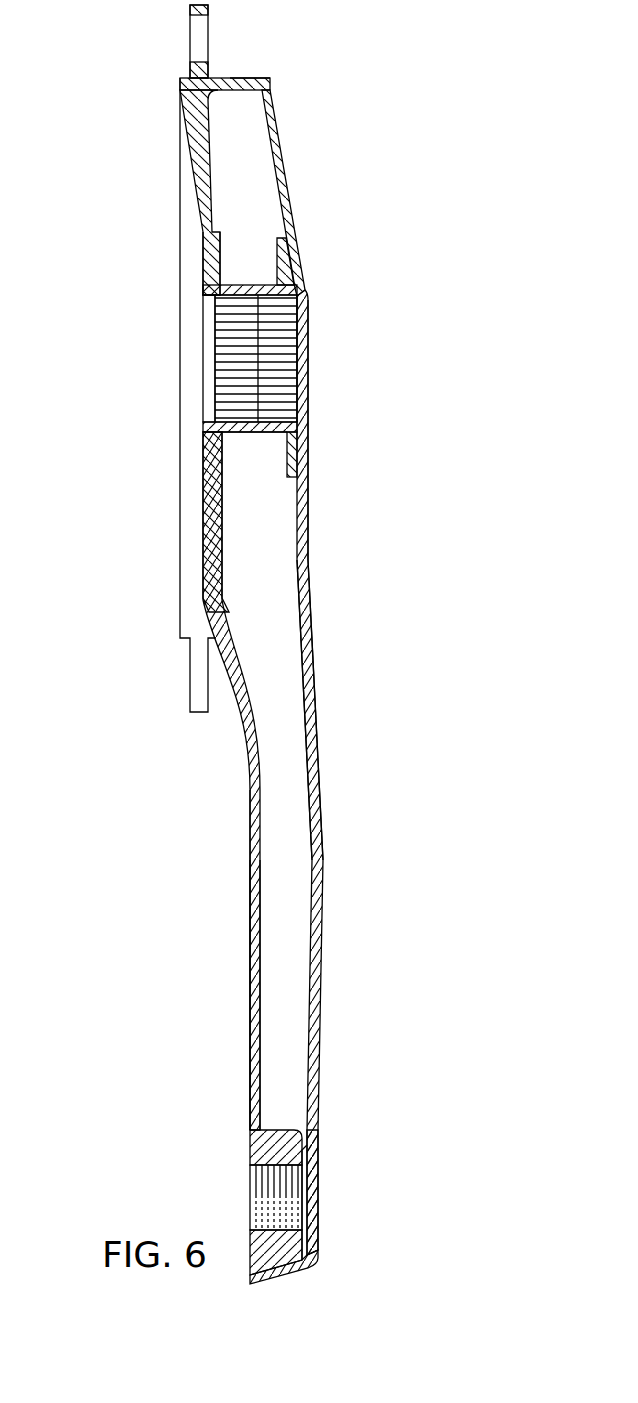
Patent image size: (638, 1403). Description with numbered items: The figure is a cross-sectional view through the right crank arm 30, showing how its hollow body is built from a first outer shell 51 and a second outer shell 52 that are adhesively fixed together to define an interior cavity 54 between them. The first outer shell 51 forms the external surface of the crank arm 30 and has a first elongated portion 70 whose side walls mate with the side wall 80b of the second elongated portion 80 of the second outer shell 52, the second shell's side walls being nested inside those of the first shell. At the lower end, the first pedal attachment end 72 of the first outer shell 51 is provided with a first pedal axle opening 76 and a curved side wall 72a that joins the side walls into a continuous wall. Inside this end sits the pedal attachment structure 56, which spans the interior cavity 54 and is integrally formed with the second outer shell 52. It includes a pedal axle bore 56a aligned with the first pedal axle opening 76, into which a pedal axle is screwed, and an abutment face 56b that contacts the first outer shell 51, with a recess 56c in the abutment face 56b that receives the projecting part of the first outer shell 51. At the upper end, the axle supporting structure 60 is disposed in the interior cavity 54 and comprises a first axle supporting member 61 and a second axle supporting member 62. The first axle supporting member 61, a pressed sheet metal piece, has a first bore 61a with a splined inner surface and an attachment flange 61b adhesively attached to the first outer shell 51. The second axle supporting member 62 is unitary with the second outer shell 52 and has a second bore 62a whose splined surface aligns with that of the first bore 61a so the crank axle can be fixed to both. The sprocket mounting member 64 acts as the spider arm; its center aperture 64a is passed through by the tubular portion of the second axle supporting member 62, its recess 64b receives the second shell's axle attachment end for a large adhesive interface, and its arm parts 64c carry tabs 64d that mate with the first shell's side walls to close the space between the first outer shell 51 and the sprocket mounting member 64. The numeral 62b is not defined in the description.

The right crank arm 30 is at (412, 202).
The first outer shell 51 is at (330, 882).
The second outer shell 52 is at (242, 899).
The interior cavity 54 is at (280, 733).
The pedal attachment structure 56 is at (279, 1120).
The pedal axle bore 56a is at (278, 1228).
The abutment face 56b is at (310, 1148).
The recess 56c is at (303, 1238).
The axle supporting structure 60 is at (262, 454).
The first axle supporting member 61 is at (273, 284).
The first bore 61a is at (282, 375).
The attachment flange 61b is at (297, 457).
The second axle supporting member 62 is at (242, 284).
The second bore 62a is at (228, 338).
The second member wall 62b is at (203, 268).
The sprocket mounting member 64 is at (214, 153).
The center aperture 64a is at (216, 421).
The recess 64b is at (208, 497).
The arm parts 64c is at (209, 33).
The tab 64d is at (248, 78).
The first elongated portion 70 is at (322, 806).
The first pedal attachment end 72 is at (318, 1137).
The curved side wall 72a is at (285, 1272).
The first pedal axle opening 76 is at (305, 1163).
The second elongated portion 80 is at (249, 965).
The side wall 80b is at (282, 1020).